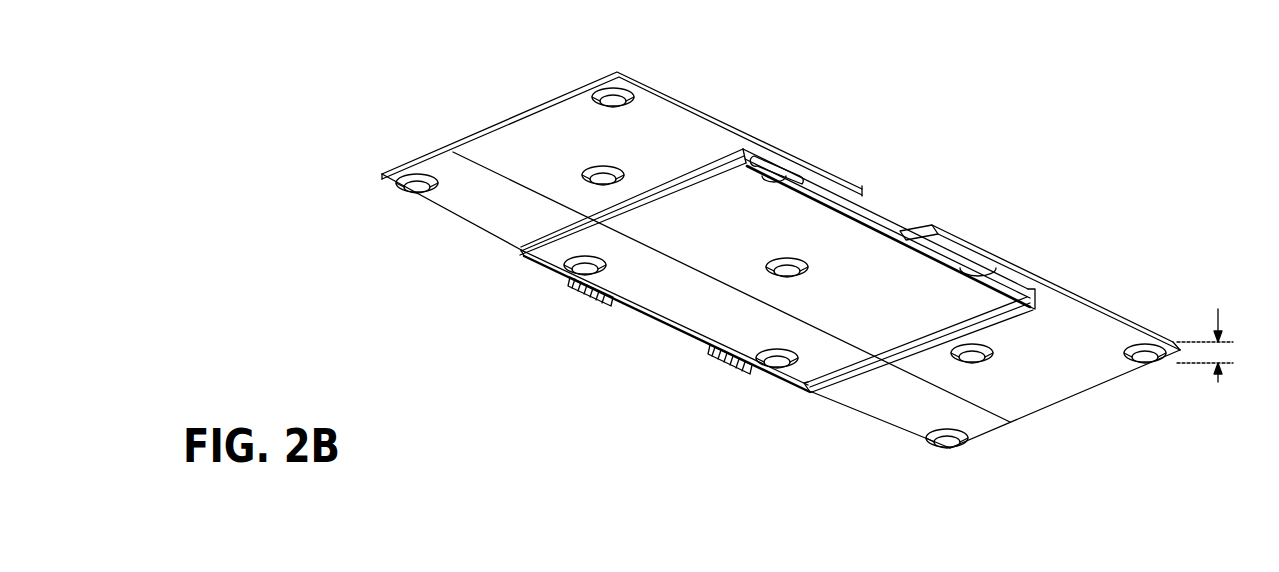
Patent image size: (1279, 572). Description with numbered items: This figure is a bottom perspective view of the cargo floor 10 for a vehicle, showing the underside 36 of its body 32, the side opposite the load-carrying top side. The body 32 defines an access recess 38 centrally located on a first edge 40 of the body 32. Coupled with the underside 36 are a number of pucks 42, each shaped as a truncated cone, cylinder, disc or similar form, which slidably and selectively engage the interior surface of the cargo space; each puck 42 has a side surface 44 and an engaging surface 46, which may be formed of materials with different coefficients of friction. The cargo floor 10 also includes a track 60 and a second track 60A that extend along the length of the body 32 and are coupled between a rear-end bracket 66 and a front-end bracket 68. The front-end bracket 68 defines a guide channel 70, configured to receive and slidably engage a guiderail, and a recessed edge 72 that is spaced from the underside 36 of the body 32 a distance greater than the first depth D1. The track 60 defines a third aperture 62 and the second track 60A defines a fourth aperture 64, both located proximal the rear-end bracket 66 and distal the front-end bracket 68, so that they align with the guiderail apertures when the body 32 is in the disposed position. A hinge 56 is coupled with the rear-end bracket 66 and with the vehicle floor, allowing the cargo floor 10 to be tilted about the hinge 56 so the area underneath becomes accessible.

The cargo floor 10 is at (1140, 163).
The body 32 is at (537, 140).
The underside 36 is at (862, 314).
The access recess 38 is at (916, 215).
The first edge 40 is at (662, 93).
The puck 42 is at (1143, 362).
The side surface 44 is at (977, 353).
The engaging surface 46 is at (973, 363).
The hinge 56 is at (723, 361).
The track 60 is at (718, 153).
The second track 60A is at (937, 327).
The third aperture 62 is at (527, 262).
The fourth aperture 64 is at (806, 393).
The rear-end bracket 66 is at (657, 316).
The front-end bracket 68 is at (818, 197).
The guide channel 70 is at (768, 153).
The recessed edge 72 is at (877, 217).
The first depth D1 is at (1218, 309).